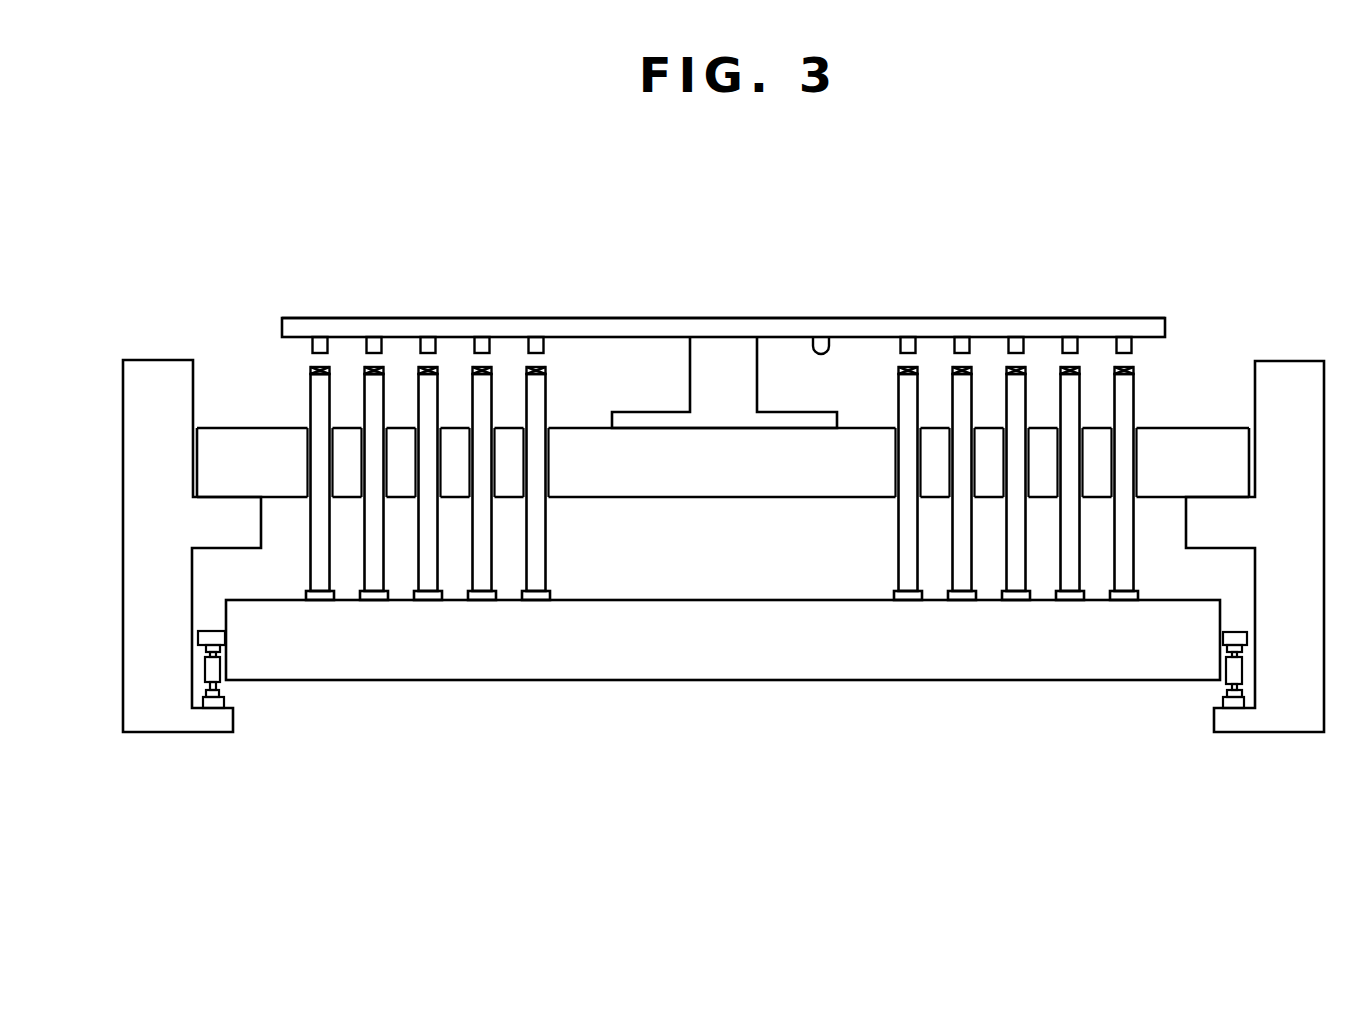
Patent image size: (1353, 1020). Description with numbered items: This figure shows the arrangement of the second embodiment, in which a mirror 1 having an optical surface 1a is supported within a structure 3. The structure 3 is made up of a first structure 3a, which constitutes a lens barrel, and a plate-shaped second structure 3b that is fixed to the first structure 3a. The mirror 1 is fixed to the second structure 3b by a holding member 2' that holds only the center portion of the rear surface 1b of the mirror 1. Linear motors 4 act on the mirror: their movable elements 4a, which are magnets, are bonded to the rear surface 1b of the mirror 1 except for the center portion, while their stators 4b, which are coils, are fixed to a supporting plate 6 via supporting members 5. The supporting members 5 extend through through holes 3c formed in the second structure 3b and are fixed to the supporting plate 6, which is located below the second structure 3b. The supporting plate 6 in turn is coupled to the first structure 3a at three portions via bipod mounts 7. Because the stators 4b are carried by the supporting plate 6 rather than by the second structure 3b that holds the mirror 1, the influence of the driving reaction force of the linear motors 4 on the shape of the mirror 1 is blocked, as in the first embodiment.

The mirror 1 is at (893, 327).
The optical surface 1a is at (953, 318).
The rear surface 1b is at (820, 350).
The holding member 2' is at (724, 333).
The structure 3 is at (1300, 282).
The first structure 3a is at (1283, 382).
The second structure 3b is at (1217, 448).
The through holes 3c is at (1130, 457).
The linear motors 4 is at (293, 233).
The movable elements 4a is at (319, 345).
The stators 4b is at (332, 371).
The supporting members 5 is at (540, 573).
The supporting plate 6 is at (598, 665).
The bipod mounts 7 is at (1232, 677).